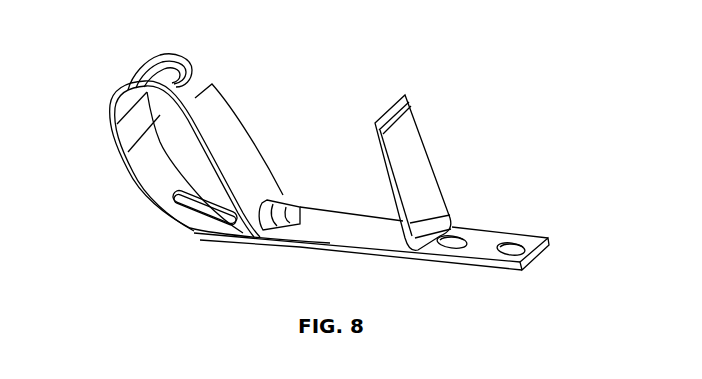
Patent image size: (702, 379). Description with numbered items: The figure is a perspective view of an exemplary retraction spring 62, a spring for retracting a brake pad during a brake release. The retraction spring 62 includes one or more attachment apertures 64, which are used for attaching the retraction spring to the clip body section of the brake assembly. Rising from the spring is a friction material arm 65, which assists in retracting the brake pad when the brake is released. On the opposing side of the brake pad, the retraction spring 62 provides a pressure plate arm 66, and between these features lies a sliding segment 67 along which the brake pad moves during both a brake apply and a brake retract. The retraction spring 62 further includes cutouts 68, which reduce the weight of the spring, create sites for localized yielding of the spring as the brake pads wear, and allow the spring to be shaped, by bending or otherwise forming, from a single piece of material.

The retraction spring 62 is at (134, 203).
The attachment apertures 64 is at (456, 235).
The friction material arm 65 is at (407, 173).
The pressure plate arm 66 is at (223, 152).
The sliding segment 67 is at (323, 225).
The cutouts 68 is at (277, 202).